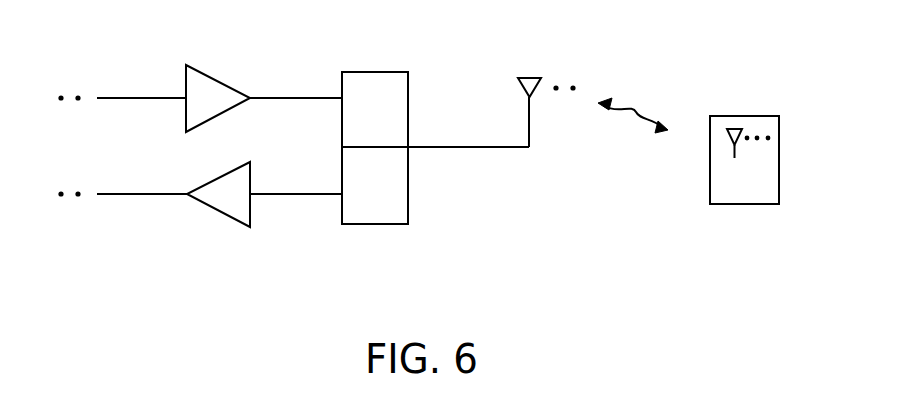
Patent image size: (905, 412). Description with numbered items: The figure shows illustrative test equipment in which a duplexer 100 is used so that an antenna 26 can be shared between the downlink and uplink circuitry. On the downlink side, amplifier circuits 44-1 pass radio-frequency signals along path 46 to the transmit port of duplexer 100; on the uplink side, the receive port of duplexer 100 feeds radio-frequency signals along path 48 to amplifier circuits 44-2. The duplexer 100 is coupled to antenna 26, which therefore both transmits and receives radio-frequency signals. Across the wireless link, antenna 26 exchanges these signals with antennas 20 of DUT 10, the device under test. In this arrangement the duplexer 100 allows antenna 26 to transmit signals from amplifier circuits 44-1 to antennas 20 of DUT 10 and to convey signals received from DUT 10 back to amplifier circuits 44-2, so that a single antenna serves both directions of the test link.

The DUT 10 is at (774, 137).
The antennas of DUT 20 is at (733, 129).
The antennas 26 is at (529, 78).
The amplifier circuits 44-1 is at (208, 73).
The amplifier circuits 44-2 is at (216, 211).
The paths 46 is at (300, 98).
The paths 48 is at (300, 194).
The duplexer 100 is at (387, 224).